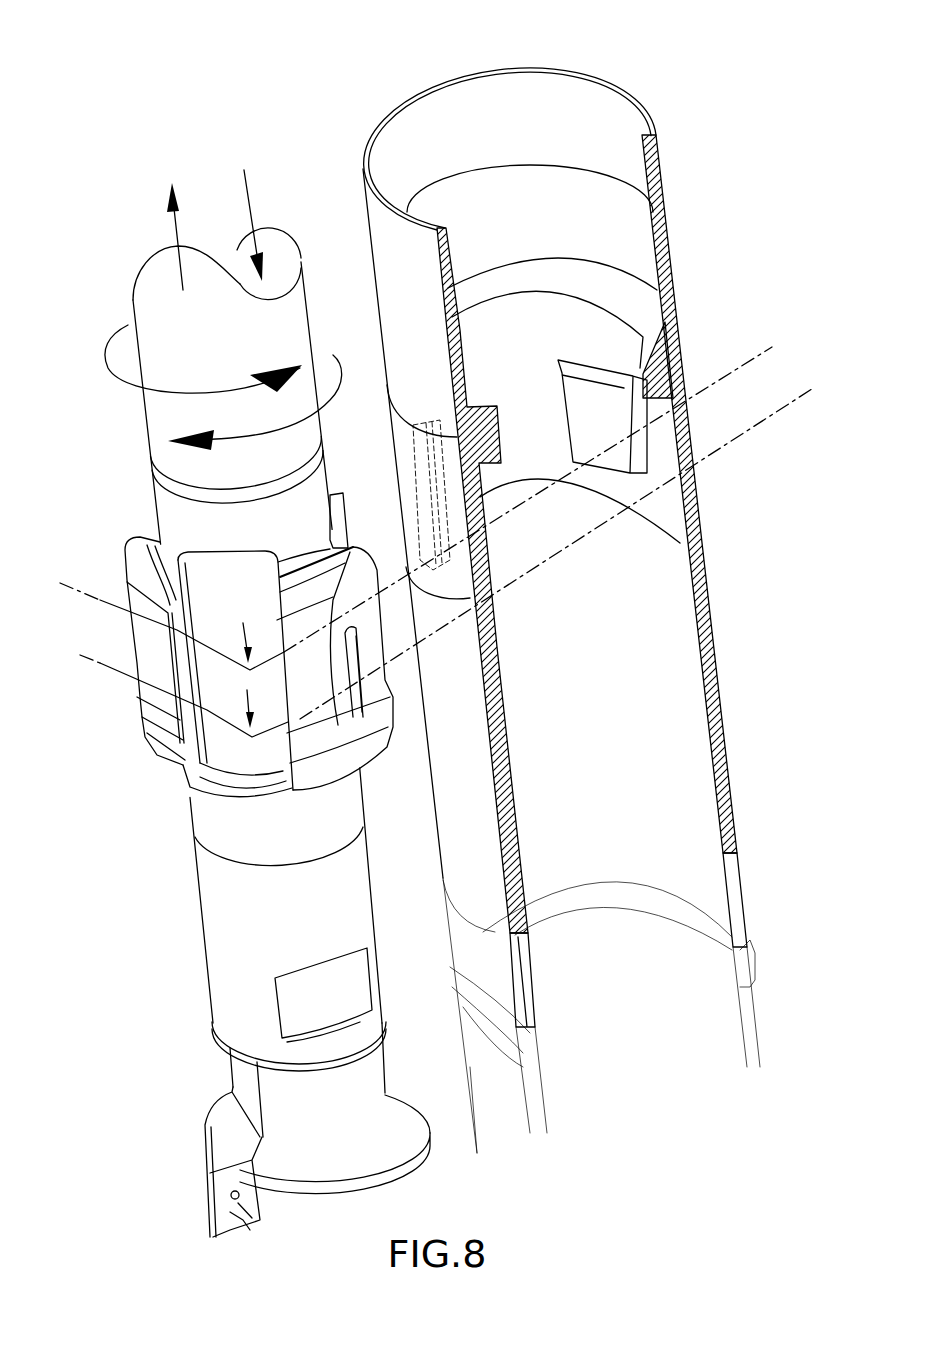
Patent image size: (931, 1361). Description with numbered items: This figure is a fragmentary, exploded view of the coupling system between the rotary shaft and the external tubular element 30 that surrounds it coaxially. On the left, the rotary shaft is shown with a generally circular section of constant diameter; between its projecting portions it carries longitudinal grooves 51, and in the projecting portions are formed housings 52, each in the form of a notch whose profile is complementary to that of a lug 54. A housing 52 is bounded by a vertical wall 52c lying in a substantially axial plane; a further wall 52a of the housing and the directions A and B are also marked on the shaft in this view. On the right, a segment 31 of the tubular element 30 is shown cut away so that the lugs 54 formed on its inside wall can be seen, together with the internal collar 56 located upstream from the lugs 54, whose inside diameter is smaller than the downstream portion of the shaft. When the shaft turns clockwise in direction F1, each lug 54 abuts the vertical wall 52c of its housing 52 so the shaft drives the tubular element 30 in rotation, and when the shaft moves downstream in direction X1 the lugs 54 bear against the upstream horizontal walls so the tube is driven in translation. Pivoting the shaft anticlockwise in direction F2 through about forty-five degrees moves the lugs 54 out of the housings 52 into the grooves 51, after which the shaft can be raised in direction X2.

The tubular element 30 is at (293, 311).
The segment of the tubular element 31 is at (758, 236).
The groove 51 is at (230, 575).
The housing 52 is at (390, 695).
The lower flange of collar 52a is at (331, 737).
The vertical wall 52c is at (335, 612).
The lug 54 is at (587, 408).
The internal collar 56 is at (650, 384).
The downstream direction X1 is at (247, 213).
The raising direction X2 is at (183, 251).
The clockwise direction F1 is at (272, 431).
The anticlockwise direction F2 is at (190, 393).
The direction A is at (238, 639).
The direction B is at (241, 704).